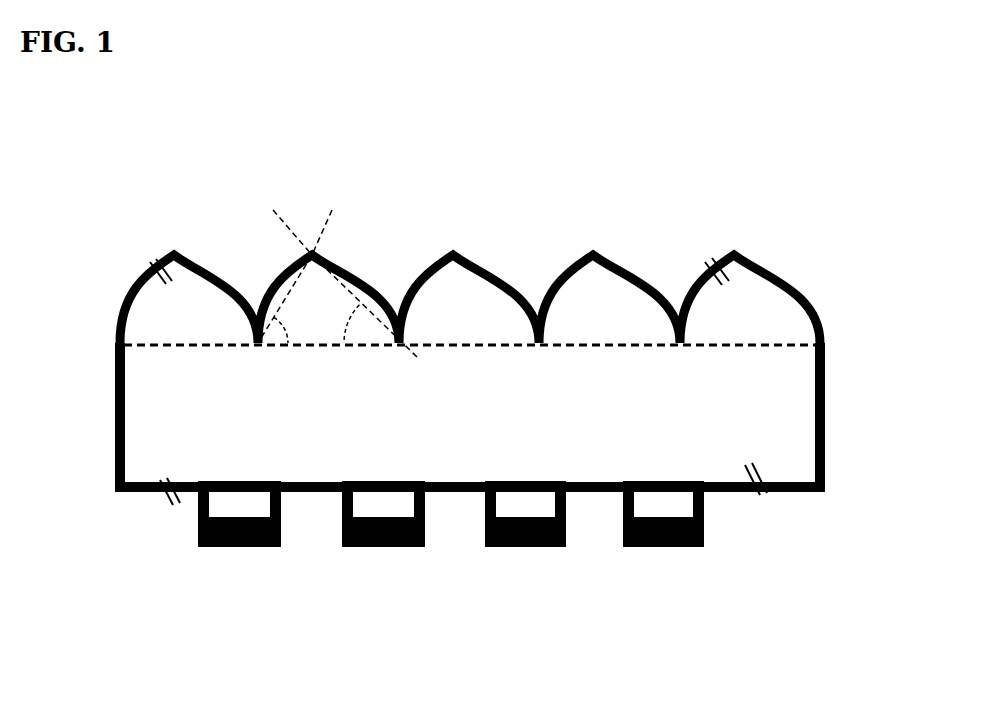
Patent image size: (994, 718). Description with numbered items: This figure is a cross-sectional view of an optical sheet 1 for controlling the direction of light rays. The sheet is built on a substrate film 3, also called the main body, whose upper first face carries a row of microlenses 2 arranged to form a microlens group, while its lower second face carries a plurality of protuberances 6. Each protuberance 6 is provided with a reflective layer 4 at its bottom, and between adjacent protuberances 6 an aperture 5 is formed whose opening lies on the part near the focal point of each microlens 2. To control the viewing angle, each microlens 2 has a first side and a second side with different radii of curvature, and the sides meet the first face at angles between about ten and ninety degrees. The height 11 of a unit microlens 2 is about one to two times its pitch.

The optical sheet for controlling the direction of light rays 1 is at (517, 395).
The microlens 2 is at (515, 299).
The substrate film 3 is at (517, 424).
The reflective layer 4 is at (537, 526).
The aperture 5 is at (594, 560).
The protuberance 6 is at (768, 506).
The height 11 is at (470, 305).